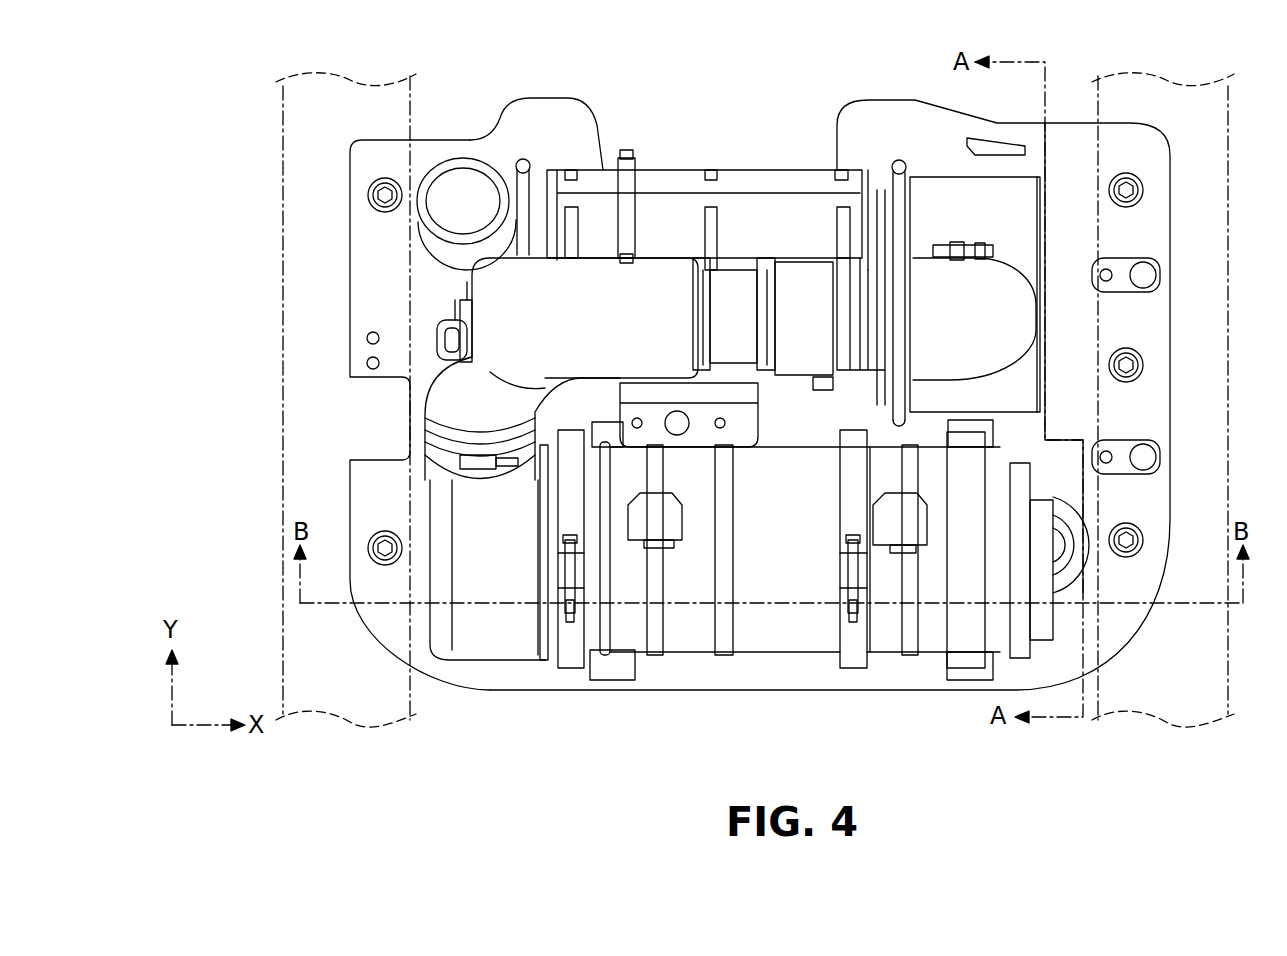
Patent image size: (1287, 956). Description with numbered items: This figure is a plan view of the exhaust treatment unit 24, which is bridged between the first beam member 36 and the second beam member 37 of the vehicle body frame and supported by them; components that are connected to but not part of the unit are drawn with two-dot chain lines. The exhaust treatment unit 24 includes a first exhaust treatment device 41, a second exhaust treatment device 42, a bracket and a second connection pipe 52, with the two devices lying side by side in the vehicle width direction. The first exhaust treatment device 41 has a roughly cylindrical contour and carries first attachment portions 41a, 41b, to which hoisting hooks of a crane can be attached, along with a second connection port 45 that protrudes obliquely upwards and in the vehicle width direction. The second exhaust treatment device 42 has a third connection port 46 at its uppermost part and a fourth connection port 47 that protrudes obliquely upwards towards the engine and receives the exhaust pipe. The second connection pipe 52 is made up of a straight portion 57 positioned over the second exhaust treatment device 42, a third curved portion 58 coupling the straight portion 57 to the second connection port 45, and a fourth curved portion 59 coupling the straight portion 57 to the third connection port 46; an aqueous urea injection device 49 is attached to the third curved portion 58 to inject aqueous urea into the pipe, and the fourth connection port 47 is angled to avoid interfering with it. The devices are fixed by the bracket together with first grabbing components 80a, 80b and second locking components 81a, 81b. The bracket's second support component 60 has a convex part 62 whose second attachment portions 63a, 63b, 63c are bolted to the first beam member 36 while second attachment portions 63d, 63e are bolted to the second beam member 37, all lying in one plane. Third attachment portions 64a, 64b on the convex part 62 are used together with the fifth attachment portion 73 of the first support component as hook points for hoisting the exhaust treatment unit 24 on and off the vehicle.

The exhaust treatment unit 24 is at (630, 82).
The first beam member 36 is at (1150, 722).
The second beam member 37 is at (315, 725).
The first exhaust treatment device 41 is at (823, 637).
The first attachment portion 41a is at (899, 530).
The first attachment portion 41b is at (643, 533).
The second exhaust treatment device 42 is at (975, 205).
The second connection port 45 is at (458, 466).
The third connection port 46 is at (948, 255).
The fourth connection port 47 is at (440, 252).
The aqueous urea injection device 49 is at (440, 345).
The second connection pipe 52 is at (797, 102).
The straight portion 57 is at (728, 297).
The third curved portion 58 is at (548, 283).
The fourth curved portion 59 is at (970, 300).
The second support component 60 is at (489, 688).
The convex part 62 is at (398, 626).
The second attachment portion 63a is at (1147, 538).
The second attachment portion 63b is at (1146, 366).
The second attachment portion 63c is at (1146, 188).
The second attachment portion 63d is at (373, 540).
The second attachment portion 63e is at (373, 187).
The third attachment portion 64a is at (1168, 432).
The third attachment portion 64b is at (1168, 254).
The fifth attachment portion 73 is at (697, 430).
The first grabbing component 80a is at (980, 580).
The first grabbing component 80b is at (602, 580).
The second locking component 81a is at (902, 195).
The second locking component 81b is at (523, 195).